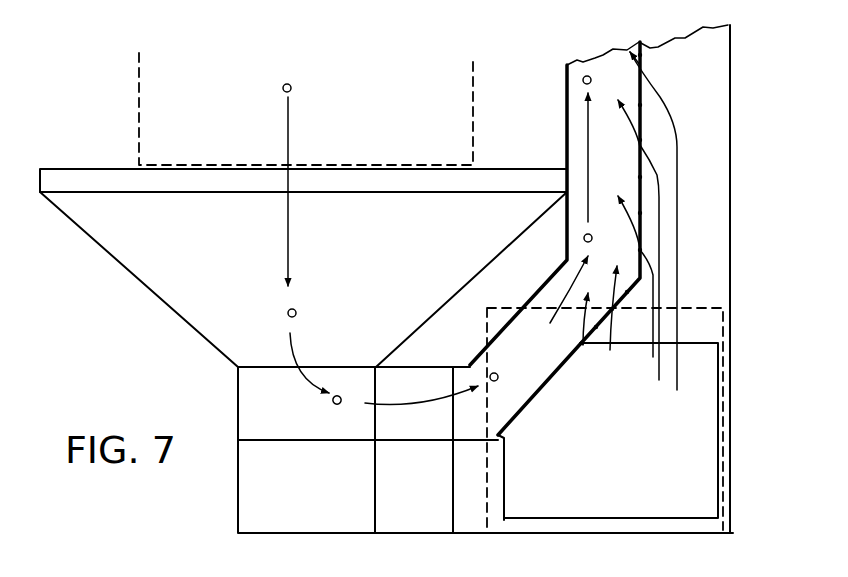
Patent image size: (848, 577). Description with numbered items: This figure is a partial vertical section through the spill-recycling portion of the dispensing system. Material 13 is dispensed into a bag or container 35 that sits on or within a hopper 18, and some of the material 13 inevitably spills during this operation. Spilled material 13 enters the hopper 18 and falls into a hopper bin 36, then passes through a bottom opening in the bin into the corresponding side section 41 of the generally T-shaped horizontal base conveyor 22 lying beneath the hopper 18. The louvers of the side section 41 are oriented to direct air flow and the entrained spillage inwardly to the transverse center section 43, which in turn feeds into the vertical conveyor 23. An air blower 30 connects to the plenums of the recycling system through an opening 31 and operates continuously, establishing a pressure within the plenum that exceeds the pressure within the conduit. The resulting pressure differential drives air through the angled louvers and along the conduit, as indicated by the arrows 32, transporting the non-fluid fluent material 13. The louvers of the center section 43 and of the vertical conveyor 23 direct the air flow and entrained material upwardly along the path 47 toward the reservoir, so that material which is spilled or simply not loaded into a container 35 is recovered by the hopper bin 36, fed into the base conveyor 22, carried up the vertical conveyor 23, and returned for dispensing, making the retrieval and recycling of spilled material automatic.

The material 13 is at (296, 88).
The hopper 18 is at (94, 167).
The conveyor 22 is at (236, 513).
The vertical conveyor 23 is at (732, 224).
The blower 30 is at (728, 503).
The opening 31 is at (712, 392).
The arrows 32 is at (659, 222).
The container 35 is at (475, 103).
The hopper bin 36 is at (139, 283).
The conveyor section 41 is at (310, 496).
The transverse center section 43 is at (428, 496).
The path 47 is at (512, 362).